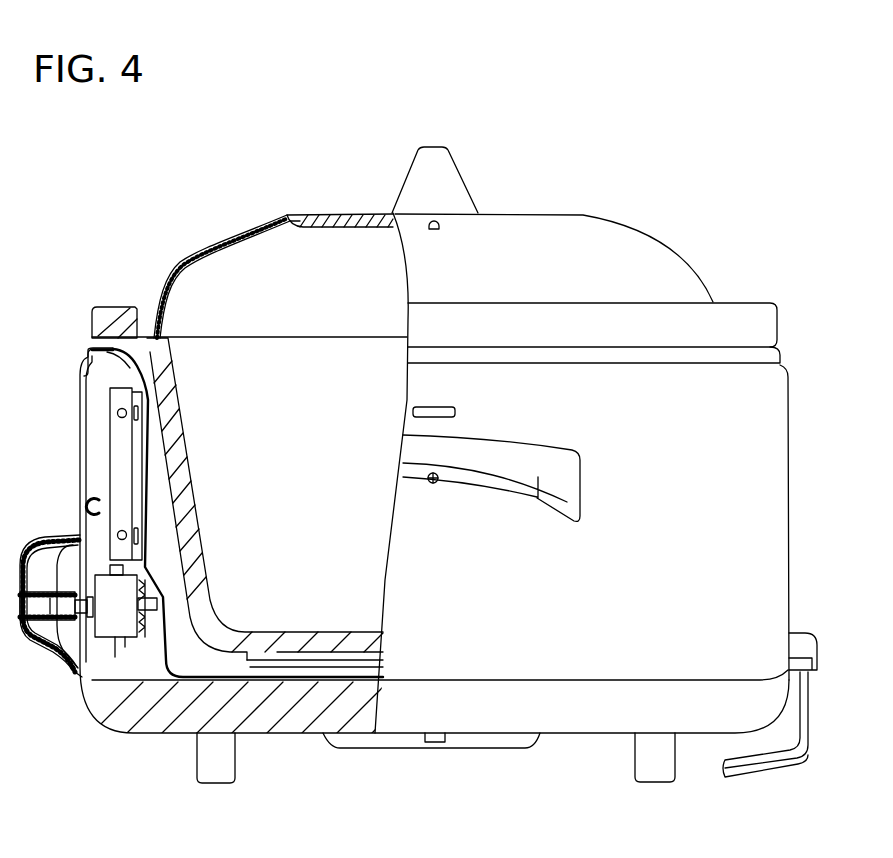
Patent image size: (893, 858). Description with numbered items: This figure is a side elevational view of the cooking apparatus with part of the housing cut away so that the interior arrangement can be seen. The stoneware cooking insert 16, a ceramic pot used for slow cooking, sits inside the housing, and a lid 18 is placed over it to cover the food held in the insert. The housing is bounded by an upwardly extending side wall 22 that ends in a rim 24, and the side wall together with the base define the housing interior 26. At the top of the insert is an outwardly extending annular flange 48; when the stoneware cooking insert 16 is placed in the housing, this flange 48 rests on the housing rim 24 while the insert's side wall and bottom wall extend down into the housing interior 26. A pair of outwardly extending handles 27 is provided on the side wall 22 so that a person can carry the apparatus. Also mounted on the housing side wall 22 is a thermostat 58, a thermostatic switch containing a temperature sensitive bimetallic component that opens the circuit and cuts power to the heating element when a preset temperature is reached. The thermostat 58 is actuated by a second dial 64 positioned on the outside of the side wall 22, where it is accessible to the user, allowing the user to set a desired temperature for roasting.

The stoneware cooking insert 16 is at (172, 342).
The lid 18 is at (523, 235).
The side wall 22 is at (790, 420).
The rim 24 is at (97, 333).
The housing interior 26 is at (203, 658).
The handles 27 is at (563, 472).
The annular flange 48 is at (115, 312).
The thermostat 58 is at (108, 622).
The second dial 64 is at (42, 536).